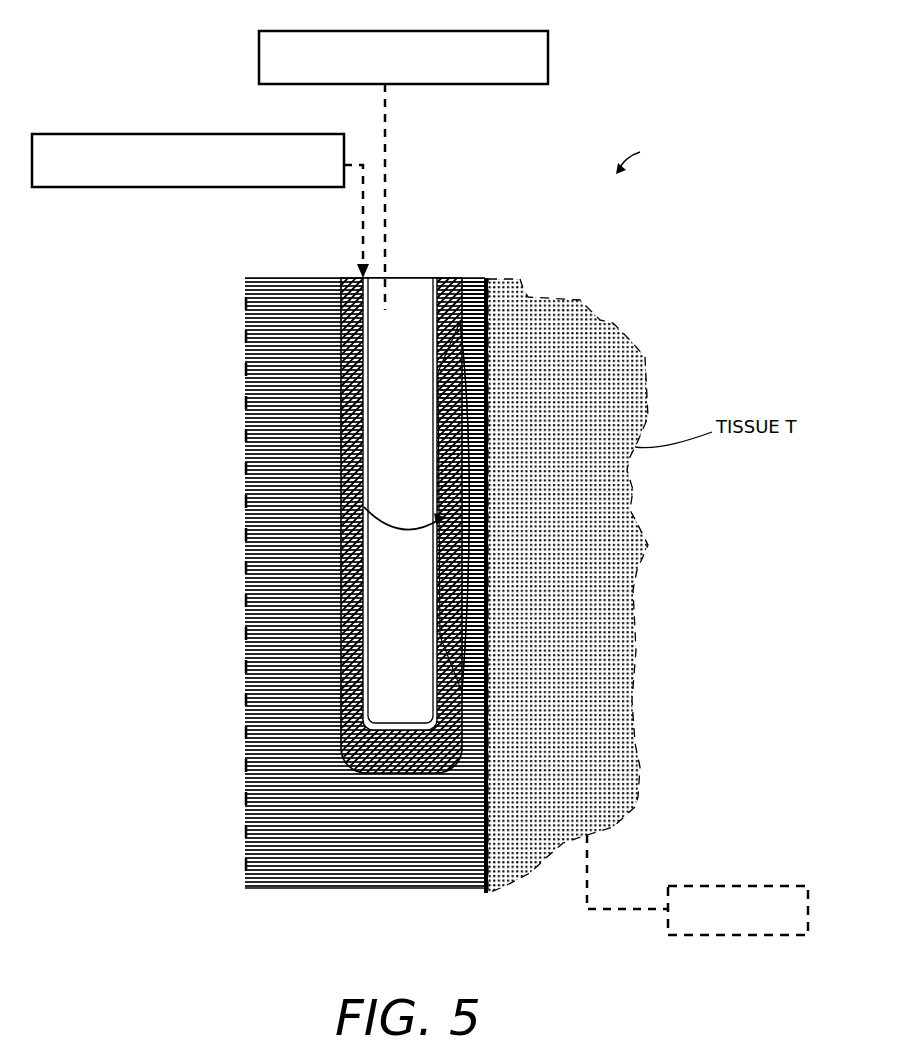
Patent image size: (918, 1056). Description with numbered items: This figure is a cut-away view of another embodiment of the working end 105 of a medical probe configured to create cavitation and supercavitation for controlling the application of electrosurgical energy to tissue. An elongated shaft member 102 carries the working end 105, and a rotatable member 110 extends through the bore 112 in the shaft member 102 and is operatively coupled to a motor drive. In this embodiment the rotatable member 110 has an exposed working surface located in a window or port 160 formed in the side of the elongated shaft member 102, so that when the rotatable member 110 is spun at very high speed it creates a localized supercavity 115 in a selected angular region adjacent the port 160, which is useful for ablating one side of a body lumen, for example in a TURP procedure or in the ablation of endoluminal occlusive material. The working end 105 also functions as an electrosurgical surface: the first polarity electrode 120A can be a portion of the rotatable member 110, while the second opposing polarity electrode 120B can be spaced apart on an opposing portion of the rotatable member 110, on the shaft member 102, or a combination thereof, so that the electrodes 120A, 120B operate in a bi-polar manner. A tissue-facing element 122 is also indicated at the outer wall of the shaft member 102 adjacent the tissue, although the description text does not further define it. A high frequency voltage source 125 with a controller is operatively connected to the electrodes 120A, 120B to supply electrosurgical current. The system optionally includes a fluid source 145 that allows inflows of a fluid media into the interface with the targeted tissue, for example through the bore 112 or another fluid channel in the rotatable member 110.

The working end 105 is at (648, 154).
The shaft member 102 is at (490, 278).
The bore 112 is at (350, 375).
The tissue-contacting electrode surface 122 is at (488, 355).
The supercavity 115 is at (463, 545).
The rotatable member 110 is at (410, 605).
The port 160 is at (455, 632).
The first polarity electrode 120A is at (420, 660).
The second opposing polarity electrode 120B is at (697, 885).
The voltage source 125 is at (403, 170).
The fluid source 145 is at (200, 206).